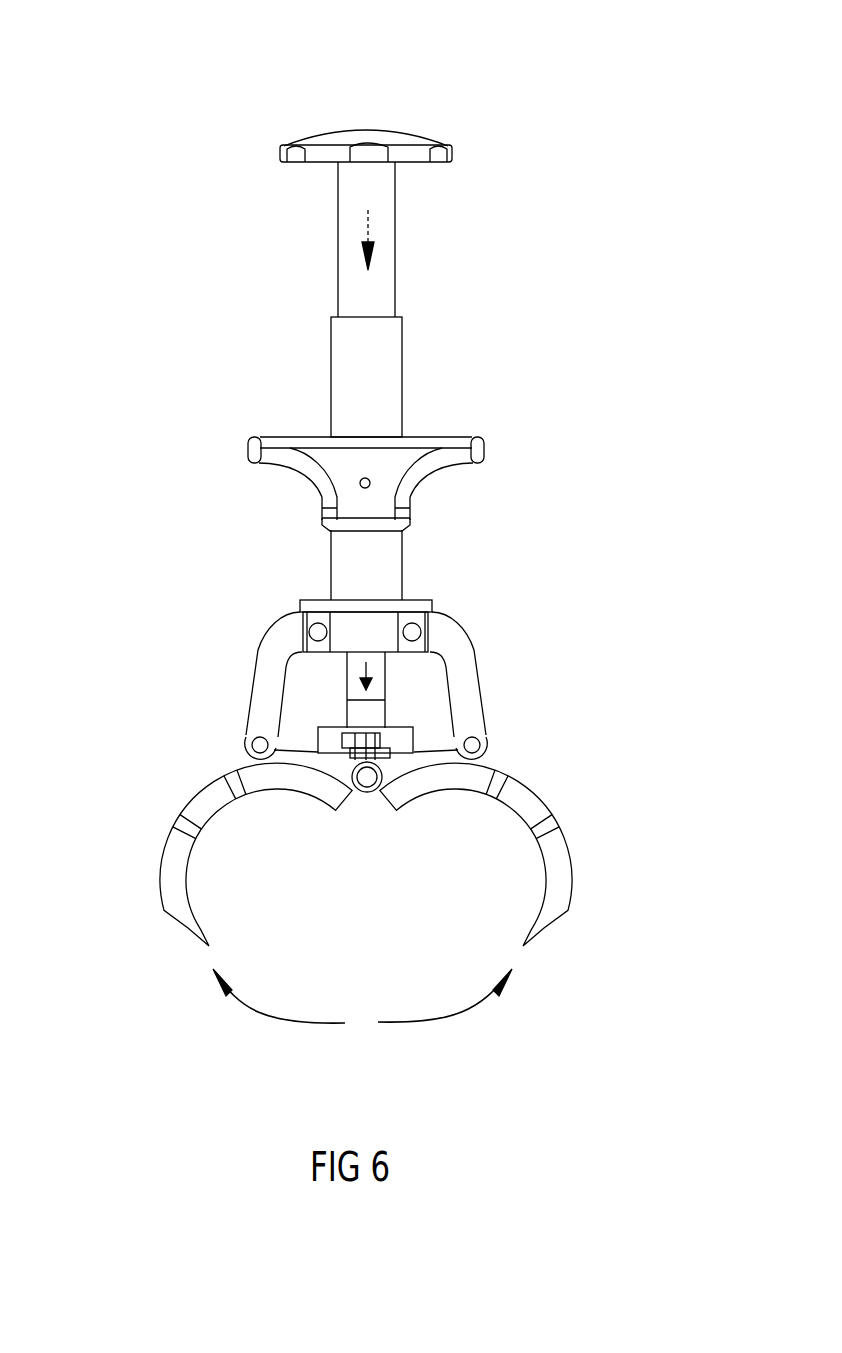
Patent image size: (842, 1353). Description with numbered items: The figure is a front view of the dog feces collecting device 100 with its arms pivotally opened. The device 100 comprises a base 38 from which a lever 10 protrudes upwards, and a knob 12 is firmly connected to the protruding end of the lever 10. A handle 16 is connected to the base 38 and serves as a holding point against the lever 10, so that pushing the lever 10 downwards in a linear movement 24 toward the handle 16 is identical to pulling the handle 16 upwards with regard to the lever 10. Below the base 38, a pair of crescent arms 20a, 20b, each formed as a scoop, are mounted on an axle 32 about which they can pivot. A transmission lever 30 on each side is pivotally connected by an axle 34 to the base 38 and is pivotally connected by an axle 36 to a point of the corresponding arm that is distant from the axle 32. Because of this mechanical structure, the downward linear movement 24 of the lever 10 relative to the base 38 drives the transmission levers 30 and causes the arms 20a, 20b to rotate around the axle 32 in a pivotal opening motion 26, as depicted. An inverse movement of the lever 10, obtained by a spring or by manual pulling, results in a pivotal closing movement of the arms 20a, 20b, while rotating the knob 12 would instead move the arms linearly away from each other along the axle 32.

The dog feces collecting device 100 is at (127, 72).
The knob 12 is at (412, 138).
The lever 10 is at (385, 270).
The linear movement 24 is at (368, 228).
The base 38 is at (375, 368).
The handle 16 is at (345, 487).
The axle 34 is at (318, 633).
The transmission lever 30 is at (268, 697).
The axle 36 is at (260, 745).
The axle 32 is at (367, 792).
The crescent arm 20a is at (176, 865).
The crescent arm 20b is at (556, 862).
The pivotal motion 26 is at (452, 1022).